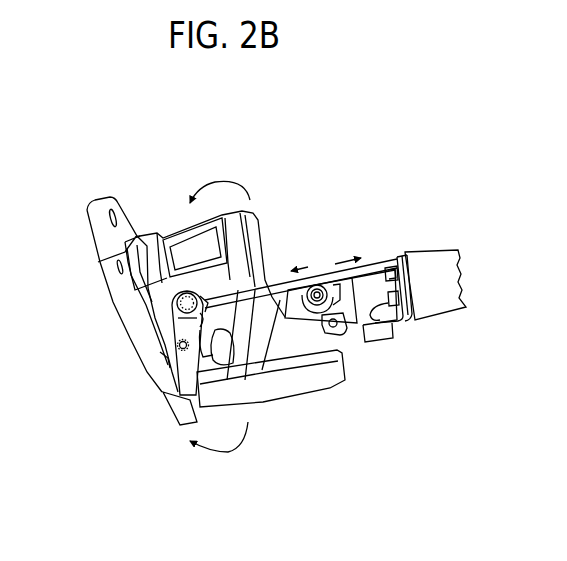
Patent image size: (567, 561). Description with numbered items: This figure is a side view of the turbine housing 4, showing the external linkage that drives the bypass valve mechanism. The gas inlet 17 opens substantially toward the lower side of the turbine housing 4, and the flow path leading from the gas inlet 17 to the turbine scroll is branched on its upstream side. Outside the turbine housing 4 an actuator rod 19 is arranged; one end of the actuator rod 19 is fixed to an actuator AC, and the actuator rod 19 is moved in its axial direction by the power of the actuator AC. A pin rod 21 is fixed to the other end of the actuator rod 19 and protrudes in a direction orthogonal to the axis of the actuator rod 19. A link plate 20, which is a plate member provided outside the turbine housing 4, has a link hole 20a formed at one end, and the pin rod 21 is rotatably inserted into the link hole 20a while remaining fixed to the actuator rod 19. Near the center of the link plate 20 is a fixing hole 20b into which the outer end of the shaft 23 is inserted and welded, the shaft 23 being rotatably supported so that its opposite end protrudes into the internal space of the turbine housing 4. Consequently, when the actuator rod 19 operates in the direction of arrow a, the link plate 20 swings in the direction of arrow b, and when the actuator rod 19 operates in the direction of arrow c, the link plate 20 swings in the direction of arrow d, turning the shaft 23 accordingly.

The turbine housing 4 is at (115, 164).
The gas inlet 17 is at (303, 398).
The actuator rod 19 is at (377, 262).
The link plate 20 is at (168, 395).
The link hole 20a is at (175, 300).
The fixing hole 20b is at (162, 358).
The pin rod 21 is at (193, 325).
The shaft 23 is at (178, 347).
The actuator AC is at (433, 254).
The arrow a is at (304, 268).
The arrow b is at (250, 200).
The arrow c is at (333, 262).
The arrow d is at (228, 452).